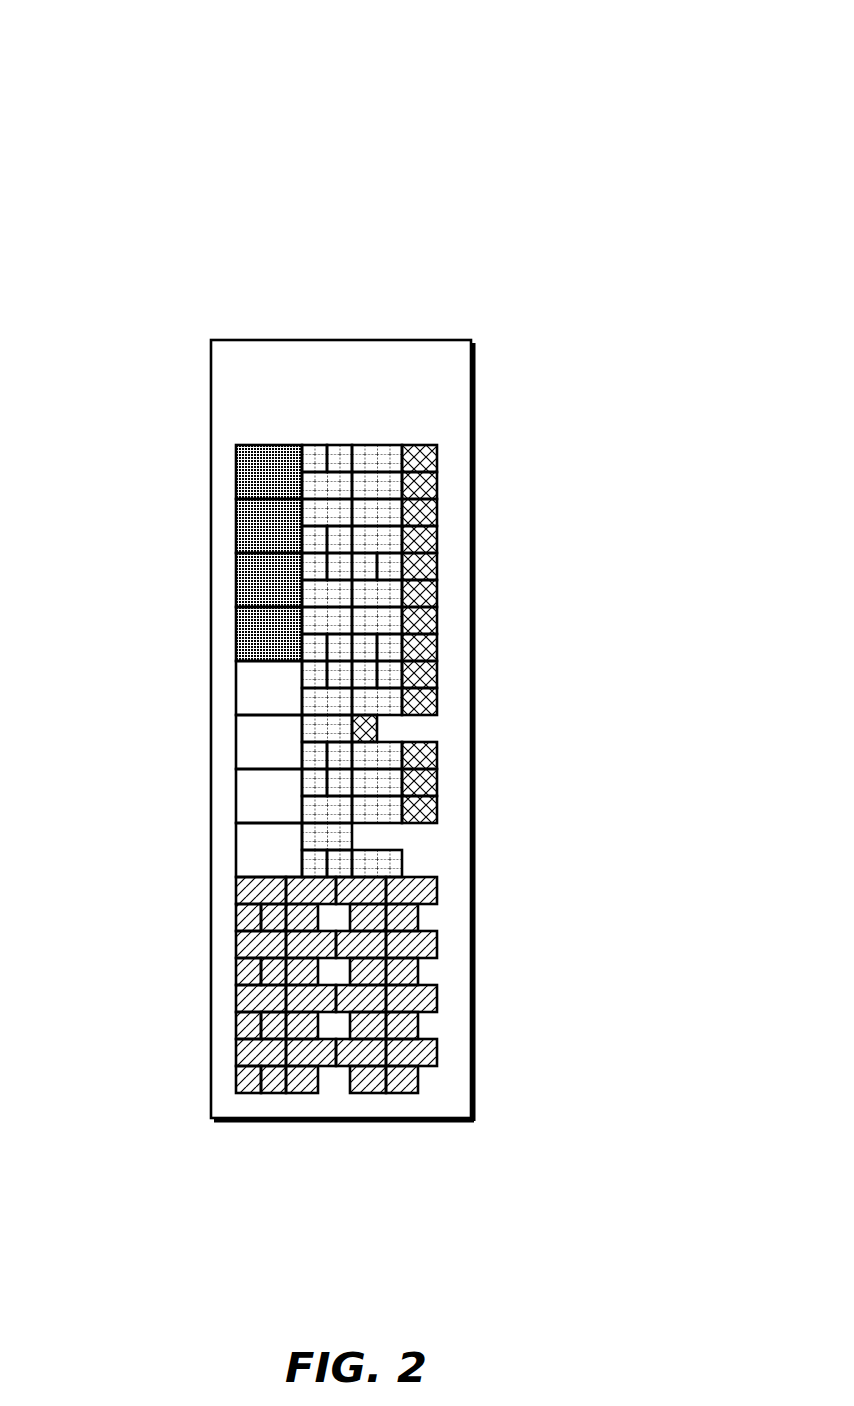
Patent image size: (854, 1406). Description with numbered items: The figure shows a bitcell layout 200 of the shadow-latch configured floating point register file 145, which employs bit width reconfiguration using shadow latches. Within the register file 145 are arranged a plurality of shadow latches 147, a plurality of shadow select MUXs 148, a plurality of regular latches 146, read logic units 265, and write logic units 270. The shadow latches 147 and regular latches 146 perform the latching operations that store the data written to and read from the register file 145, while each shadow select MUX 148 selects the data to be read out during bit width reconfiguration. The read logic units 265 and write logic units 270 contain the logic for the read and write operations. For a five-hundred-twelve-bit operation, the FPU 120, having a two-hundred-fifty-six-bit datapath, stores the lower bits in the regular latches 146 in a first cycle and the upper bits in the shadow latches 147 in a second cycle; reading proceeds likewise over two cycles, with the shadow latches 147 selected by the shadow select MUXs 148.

The FPU 120 is at (190, 78).
The register file layout diagram 200 is at (607, 201).
The shadow-latch configured floating point register file 145 is at (449, 418).
The regular latches 146 is at (236, 697).
The shadow latches 147 is at (236, 487).
The shadow select MUXs 148 is at (437, 445).
The read logic units 265 is at (402, 862).
The write logic units 270 is at (437, 1058).